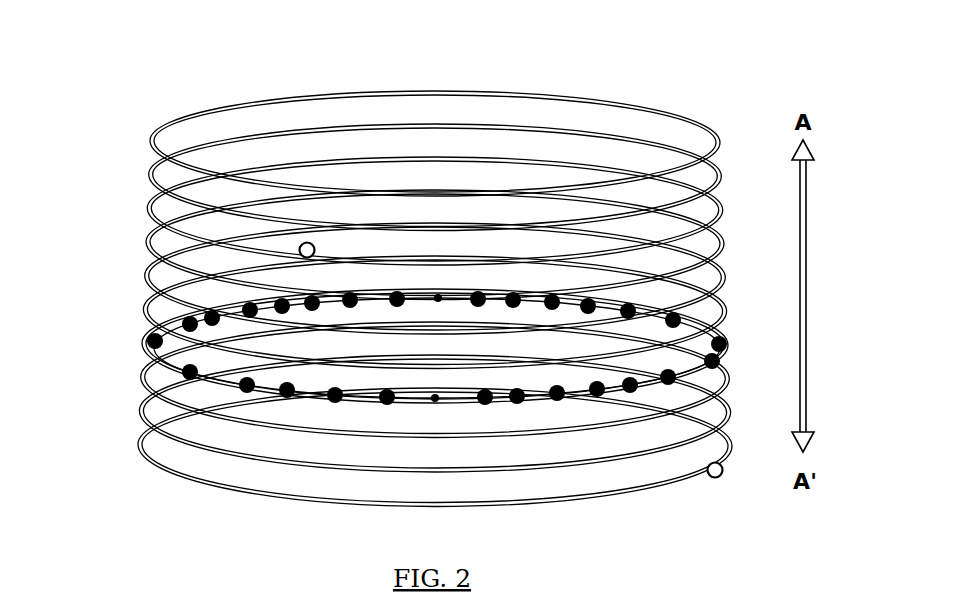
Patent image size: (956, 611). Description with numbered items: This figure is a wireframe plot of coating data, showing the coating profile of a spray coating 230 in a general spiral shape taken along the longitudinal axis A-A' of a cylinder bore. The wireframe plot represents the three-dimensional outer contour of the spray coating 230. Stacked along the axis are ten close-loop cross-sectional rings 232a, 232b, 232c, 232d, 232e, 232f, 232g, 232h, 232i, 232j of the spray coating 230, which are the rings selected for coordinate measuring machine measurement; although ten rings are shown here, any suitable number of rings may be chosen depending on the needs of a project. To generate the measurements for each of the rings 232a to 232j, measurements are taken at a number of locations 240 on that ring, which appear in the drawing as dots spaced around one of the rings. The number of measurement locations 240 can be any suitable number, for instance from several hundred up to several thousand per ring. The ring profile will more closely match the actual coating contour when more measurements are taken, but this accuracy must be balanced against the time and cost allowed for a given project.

The spray coating 230 is at (401, 265).
The close-loop cross-sectional ring 232a is at (152, 140).
The close-loop cross-sectional ring 232b is at (151, 174).
The close-loop cross-sectional ring 232c is at (149, 208).
The close-loop cross-sectional ring 232d is at (148, 242).
The close-loop cross-sectional ring 232e is at (147, 276).
The close-loop cross-sectional ring 232f is at (145, 309).
The close-loop cross-sectional ring 232g is at (144, 343).
The close-loop cross-sectional ring 232h is at (143, 377).
The close-loop cross-sectional ring 232i is at (141, 410).
The close-loop cross-sectional ring 232j is at (140, 444).
The measurement locations 240 is at (676, 326).